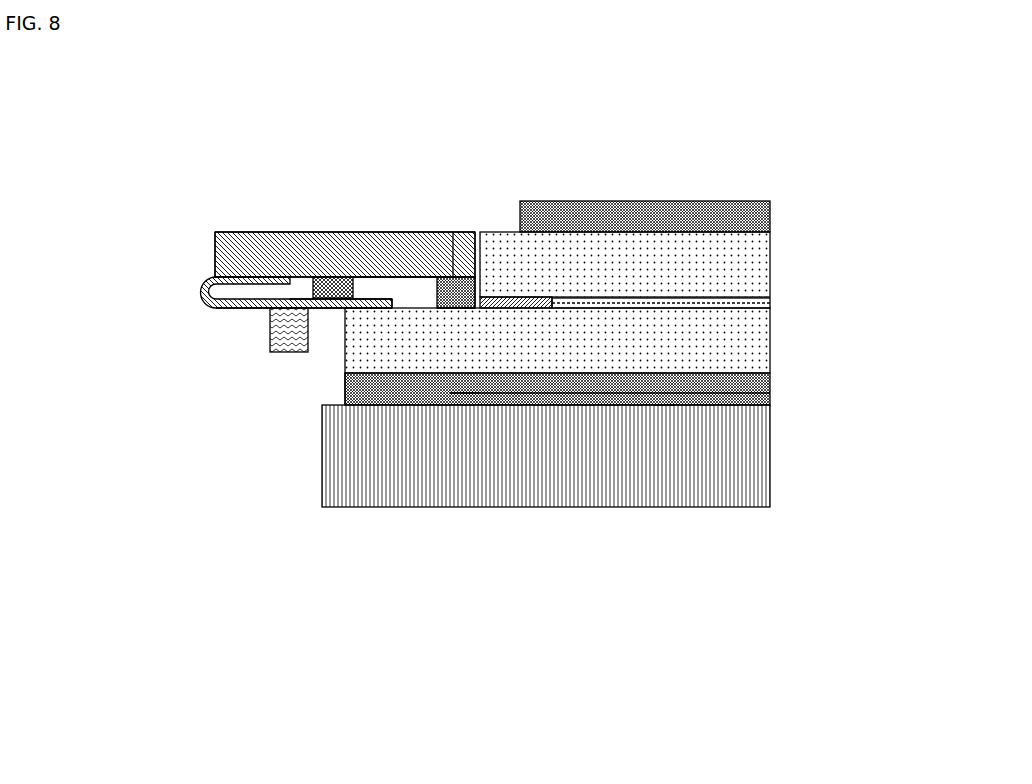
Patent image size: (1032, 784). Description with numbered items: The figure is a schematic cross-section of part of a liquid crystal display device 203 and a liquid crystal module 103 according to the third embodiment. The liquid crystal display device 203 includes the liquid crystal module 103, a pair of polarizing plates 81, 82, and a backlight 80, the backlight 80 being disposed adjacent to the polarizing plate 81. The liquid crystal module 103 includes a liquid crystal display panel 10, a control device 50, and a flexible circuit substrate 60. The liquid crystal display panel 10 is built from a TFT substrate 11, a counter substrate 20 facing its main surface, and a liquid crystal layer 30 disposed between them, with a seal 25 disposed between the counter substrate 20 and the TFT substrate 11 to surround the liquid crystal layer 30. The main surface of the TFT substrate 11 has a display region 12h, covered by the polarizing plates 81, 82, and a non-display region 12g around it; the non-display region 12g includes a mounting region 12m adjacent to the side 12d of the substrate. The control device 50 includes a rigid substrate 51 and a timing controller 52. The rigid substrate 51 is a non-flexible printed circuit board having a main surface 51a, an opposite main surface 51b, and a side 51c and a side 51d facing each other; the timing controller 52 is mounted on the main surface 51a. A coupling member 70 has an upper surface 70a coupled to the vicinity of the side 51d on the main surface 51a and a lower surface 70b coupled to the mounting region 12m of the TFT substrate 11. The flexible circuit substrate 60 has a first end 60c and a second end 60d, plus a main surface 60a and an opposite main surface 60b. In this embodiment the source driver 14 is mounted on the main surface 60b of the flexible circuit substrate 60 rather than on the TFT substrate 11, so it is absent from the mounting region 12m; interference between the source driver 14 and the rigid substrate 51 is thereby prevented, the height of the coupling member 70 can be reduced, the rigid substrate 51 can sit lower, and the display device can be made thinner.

The liquid crystal display device 203 is at (559, 397).
The polarizing plate 82 is at (771, 216).
The liquid crystal display panel 10 is at (614, 245).
The counter substrate 20 is at (771, 262).
The seal 25 is at (527, 297).
The liquid crystal layer 30 is at (771, 304).
The TFT substrate 11 is at (771, 344).
The polarizing plate 81 is at (771, 400).
The backlight 80 is at (771, 466).
The display region 12h is at (663, 410).
The lower surface 70b is at (456, 400).
The non-display region 12g is at (462, 330).
The side 12d is at (336, 377).
The control device 50 is at (312, 340).
The rigid substrate 51 is at (267, 262).
The main surface 51a is at (417, 291).
The main surface 51b is at (360, 222).
The side 51c is at (209, 231).
The side 51d is at (480, 226).
The mounting region 12m is at (338, 208).
The liquid crystal module 103 is at (458, 126).
The timing controller 52 is at (338, 277).
The coupling member 70 is at (440, 310).
The upper surface 70a is at (450, 256).
The flexible circuit substrate 60 is at (200, 293).
The main surface 60a is at (307, 290).
The main surface 60b is at (250, 320).
The first end 60c is at (290, 275).
The second end 60d is at (395, 320).
The source driver 14 is at (287, 335).